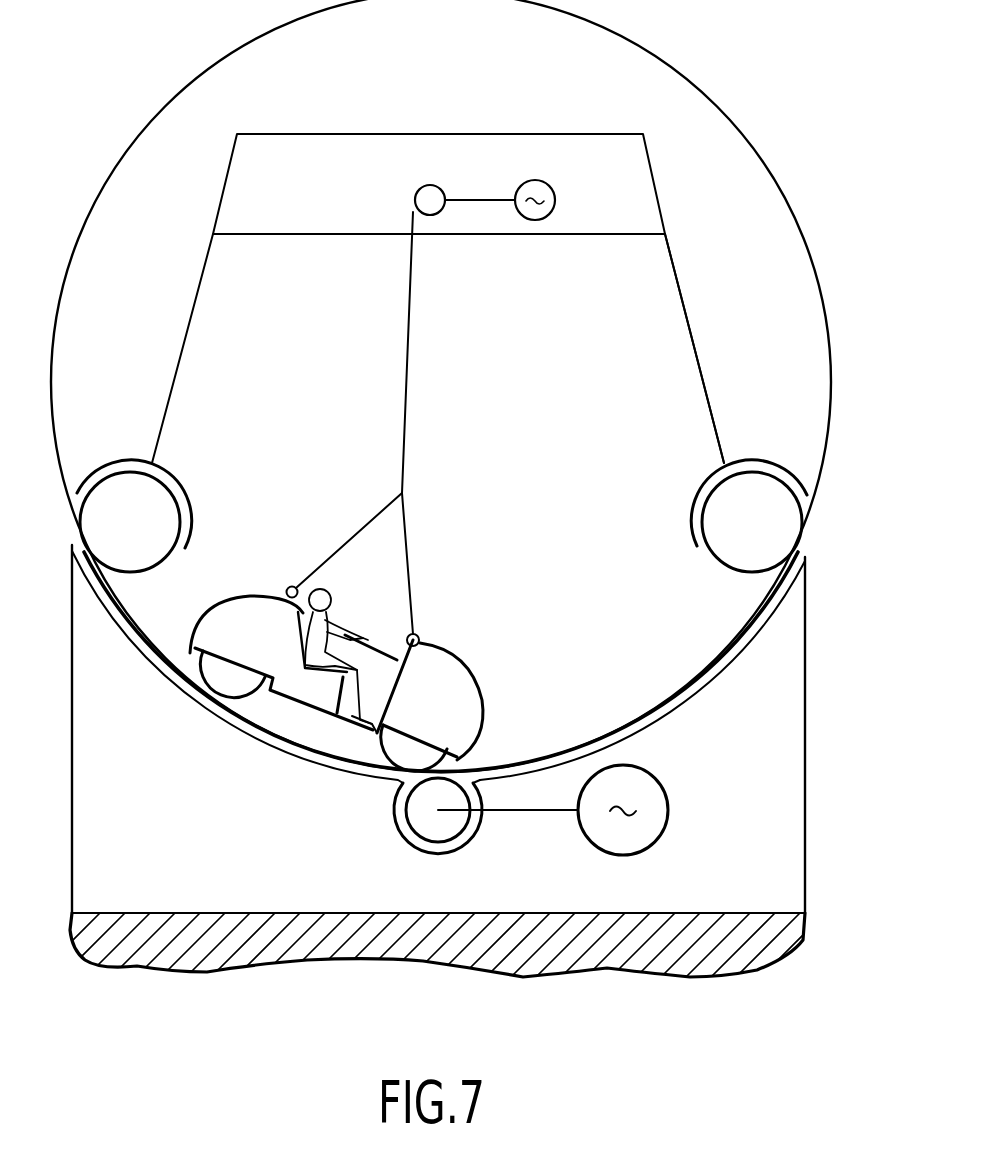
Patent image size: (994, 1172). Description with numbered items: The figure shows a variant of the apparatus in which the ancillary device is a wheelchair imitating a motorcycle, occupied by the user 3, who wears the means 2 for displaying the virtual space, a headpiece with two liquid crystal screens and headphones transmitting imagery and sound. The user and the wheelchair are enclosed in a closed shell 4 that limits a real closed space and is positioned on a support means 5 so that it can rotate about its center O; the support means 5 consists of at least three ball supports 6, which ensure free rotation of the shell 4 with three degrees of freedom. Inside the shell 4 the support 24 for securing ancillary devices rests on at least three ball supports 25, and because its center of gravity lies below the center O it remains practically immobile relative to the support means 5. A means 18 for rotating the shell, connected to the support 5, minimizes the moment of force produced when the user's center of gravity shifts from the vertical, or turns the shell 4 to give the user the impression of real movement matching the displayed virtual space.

The means for displaying the virtual space 2 is at (330, 592).
The user 3 is at (297, 610).
The closed shell 4 is at (753, 148).
The support means 5 is at (830, 755).
The ball supports 6 is at (422, 825).
The means for rotating the shell 18 is at (663, 792).
The support for securing ancillary devices 24 is at (697, 345).
The ball supports 25 is at (137, 545).